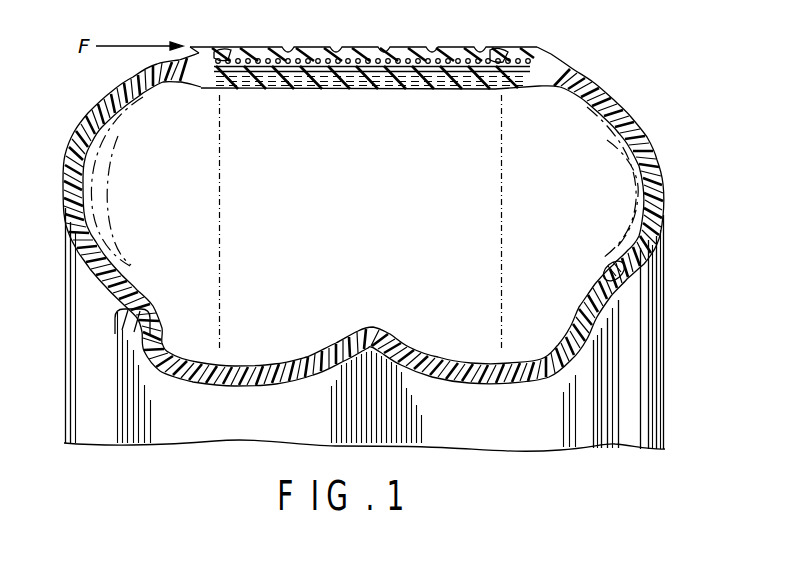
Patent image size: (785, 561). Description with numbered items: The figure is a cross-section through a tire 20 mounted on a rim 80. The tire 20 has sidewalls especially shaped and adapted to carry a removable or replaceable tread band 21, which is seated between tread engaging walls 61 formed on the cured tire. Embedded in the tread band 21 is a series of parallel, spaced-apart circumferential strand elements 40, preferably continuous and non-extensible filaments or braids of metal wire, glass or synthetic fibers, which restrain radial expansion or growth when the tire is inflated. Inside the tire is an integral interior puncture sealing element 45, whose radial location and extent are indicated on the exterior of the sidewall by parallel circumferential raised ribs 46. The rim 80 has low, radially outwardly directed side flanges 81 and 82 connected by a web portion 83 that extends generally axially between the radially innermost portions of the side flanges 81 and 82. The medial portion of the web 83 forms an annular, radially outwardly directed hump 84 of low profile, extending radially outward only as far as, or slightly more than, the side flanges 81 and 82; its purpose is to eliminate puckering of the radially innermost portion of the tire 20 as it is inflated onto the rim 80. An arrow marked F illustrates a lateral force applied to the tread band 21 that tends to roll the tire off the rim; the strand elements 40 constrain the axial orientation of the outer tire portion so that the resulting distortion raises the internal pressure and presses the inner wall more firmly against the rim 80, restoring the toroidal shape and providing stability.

The tire 20 is at (70, 130).
The tread band 21 is at (403, 43).
The circumferential strand elements 40 is at (238, 46).
The puncture sealing element 45 is at (608, 270).
The circumferential raised ribs 46 is at (617, 315).
The tread engaging walls 61 is at (225, 49).
The rim 80 is at (215, 441).
The side flange 81 is at (143, 311).
The side flange 82 is at (581, 312).
The web portion 83 is at (237, 372).
The hump 84 is at (374, 329).